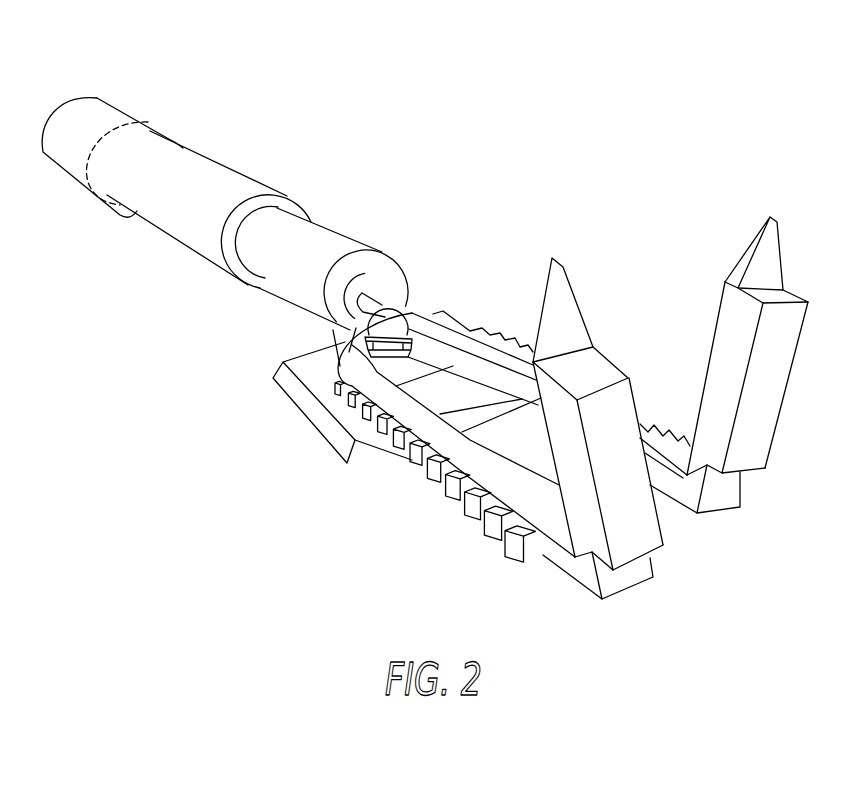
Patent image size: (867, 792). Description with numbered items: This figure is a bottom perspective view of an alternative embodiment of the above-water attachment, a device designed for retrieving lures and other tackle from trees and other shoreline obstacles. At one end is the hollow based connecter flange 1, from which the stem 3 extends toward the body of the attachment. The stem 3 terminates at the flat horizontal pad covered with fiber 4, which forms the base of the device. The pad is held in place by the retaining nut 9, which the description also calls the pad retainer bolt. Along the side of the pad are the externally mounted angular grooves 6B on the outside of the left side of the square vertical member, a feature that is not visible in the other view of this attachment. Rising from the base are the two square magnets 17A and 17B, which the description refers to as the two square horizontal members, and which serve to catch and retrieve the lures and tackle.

The hollow based connecter flange 1 is at (100, 117).
The stem 3 is at (208, 173).
The retaining nut 9 is at (398, 318).
The flat horizontal pad covered with fiber 4 is at (322, 427).
The externally mounted angular grooves 6B is at (427, 473).
The square magnet 17A is at (560, 478).
The square magnet 17B is at (712, 362).